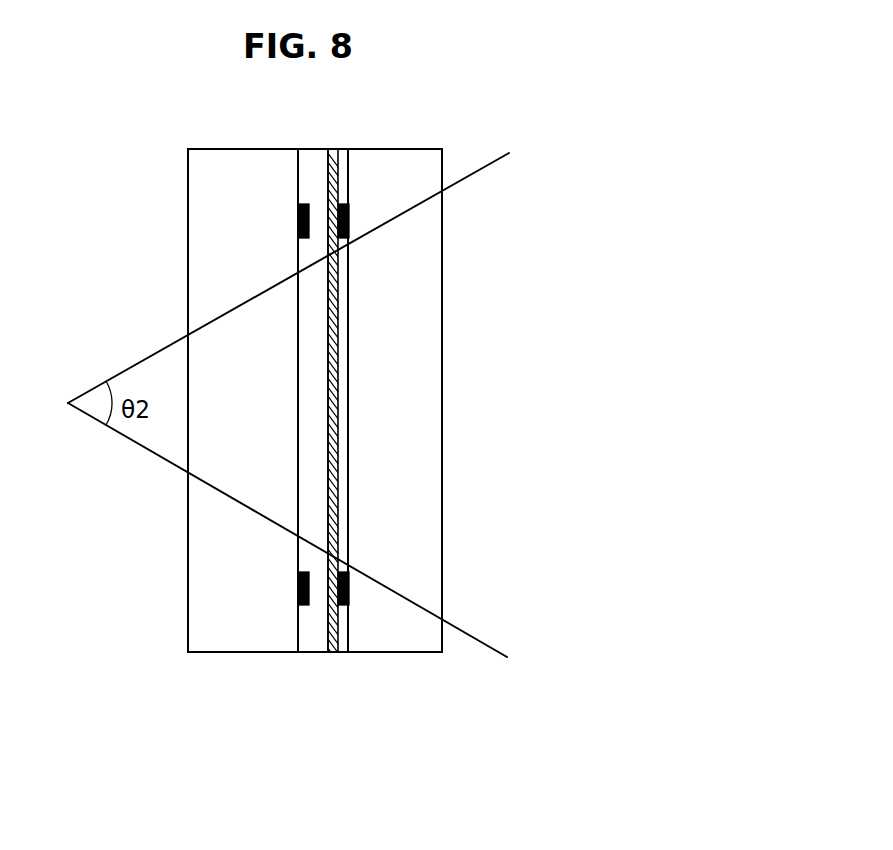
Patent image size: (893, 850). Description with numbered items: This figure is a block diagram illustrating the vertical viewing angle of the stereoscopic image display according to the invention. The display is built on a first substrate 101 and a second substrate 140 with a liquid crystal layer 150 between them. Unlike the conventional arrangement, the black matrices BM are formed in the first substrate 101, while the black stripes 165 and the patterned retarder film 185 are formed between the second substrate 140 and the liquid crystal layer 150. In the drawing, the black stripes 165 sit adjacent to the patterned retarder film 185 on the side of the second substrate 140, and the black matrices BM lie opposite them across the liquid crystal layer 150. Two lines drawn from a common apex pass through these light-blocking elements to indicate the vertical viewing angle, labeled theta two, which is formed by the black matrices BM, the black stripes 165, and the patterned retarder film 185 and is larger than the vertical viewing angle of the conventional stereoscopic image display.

The first substrate 101 is at (242, 640).
The liquid crystal layer 150 is at (312, 640).
The patterned retarder film 185 is at (339, 486).
The second substrate 140 is at (390, 640).
The black matrices BM is at (298, 226).
The black stripes 165 is at (349, 226).